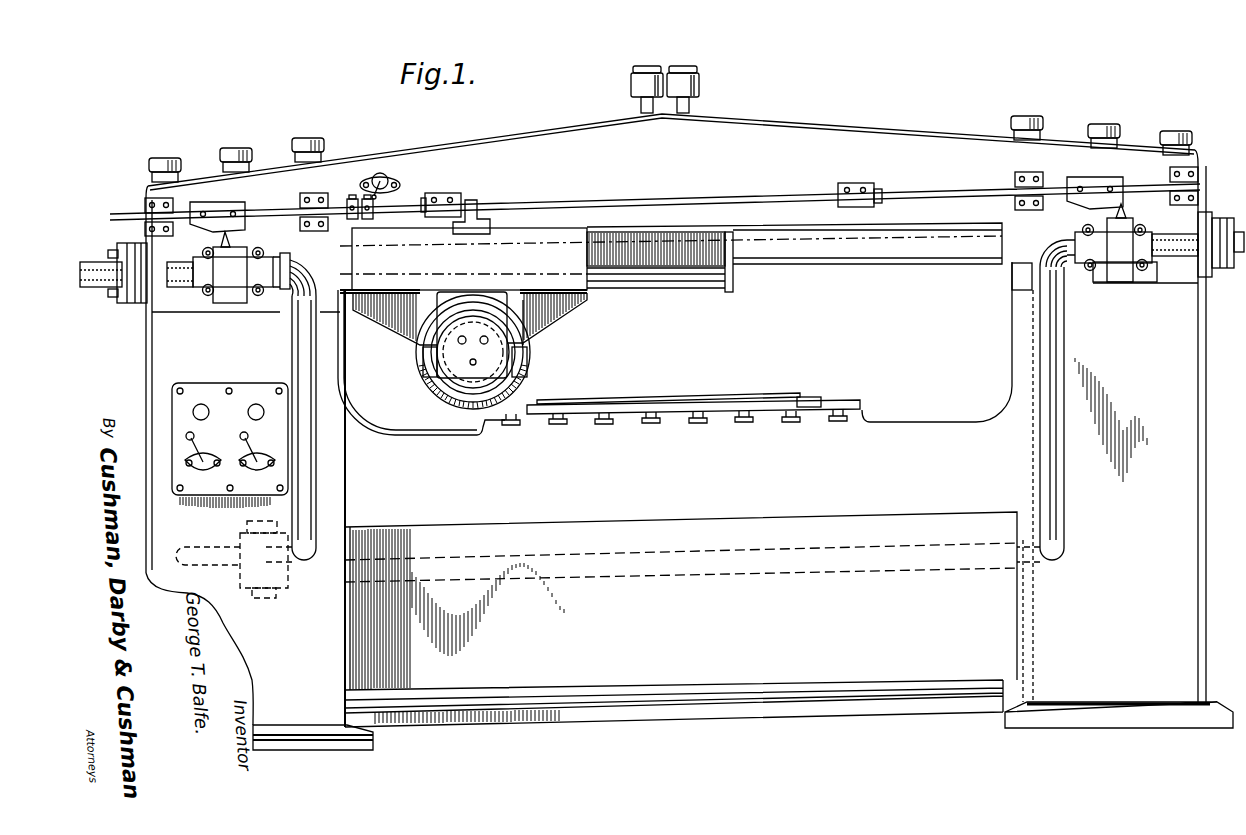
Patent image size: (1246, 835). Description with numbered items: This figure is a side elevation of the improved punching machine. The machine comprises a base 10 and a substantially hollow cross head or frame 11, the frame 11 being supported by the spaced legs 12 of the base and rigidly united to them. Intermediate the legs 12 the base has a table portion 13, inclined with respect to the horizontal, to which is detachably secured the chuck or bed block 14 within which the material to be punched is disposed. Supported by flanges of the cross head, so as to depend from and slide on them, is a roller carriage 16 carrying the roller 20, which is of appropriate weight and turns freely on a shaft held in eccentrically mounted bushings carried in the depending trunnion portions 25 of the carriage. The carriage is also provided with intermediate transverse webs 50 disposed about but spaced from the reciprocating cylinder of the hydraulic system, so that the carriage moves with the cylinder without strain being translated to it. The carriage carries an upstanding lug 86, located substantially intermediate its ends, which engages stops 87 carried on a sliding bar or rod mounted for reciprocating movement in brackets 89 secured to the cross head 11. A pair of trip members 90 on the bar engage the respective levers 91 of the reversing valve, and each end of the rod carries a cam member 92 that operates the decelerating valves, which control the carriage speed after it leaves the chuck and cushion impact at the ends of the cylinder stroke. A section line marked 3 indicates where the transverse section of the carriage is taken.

The section line 3- 3 is at (470, 490).
The base 10 is at (552, 650).
The cross head or frame 11 is at (789, 134).
The legs 12 is at (225, 352).
The table portion 13 is at (864, 430).
The chuck or bed block 14 is at (757, 398).
The roller carriage 16 is at (478, 263).
The roller 20 is at (446, 387).
The depending trunnion portions 25 is at (430, 300).
The intermediate transverse webs 50 is at (556, 282).
The upstanding lug 86 is at (478, 204).
The stops 87 is at (448, 196).
The brackets 89 is at (150, 212).
The trip members 90 is at (353, 199).
The levers 91 is at (386, 180).
The cam member 92 is at (224, 214).